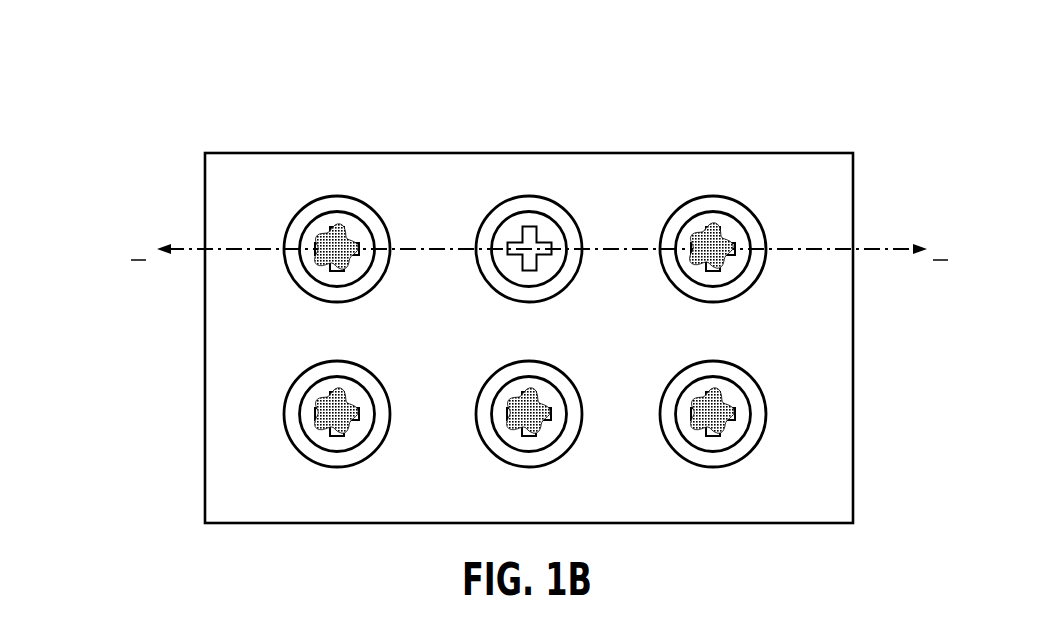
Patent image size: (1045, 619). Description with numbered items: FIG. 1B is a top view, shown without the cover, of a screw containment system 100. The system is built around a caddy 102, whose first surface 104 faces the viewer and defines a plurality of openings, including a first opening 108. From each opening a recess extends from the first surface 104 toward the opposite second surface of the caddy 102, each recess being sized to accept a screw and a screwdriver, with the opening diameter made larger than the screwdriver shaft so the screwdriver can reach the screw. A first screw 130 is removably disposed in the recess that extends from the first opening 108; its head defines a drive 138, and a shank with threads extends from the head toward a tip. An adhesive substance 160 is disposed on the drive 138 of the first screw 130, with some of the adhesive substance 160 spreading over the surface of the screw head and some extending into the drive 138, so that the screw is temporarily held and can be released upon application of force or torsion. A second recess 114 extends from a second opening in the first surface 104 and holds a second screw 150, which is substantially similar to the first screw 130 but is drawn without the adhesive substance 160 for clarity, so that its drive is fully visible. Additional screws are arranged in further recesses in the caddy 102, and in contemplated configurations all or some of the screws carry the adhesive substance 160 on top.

The screw containment system 100 is at (121, 79).
The caddy 102 is at (204, 315).
The first surface 104 is at (223, 397).
The first opening 108 is at (713, 197).
The second recess 114 is at (542, 200).
The first screw 130 is at (688, 220).
The drive 138 is at (707, 268).
The second screw 150 is at (496, 233).
The adhesive substance 160 is at (707, 240).